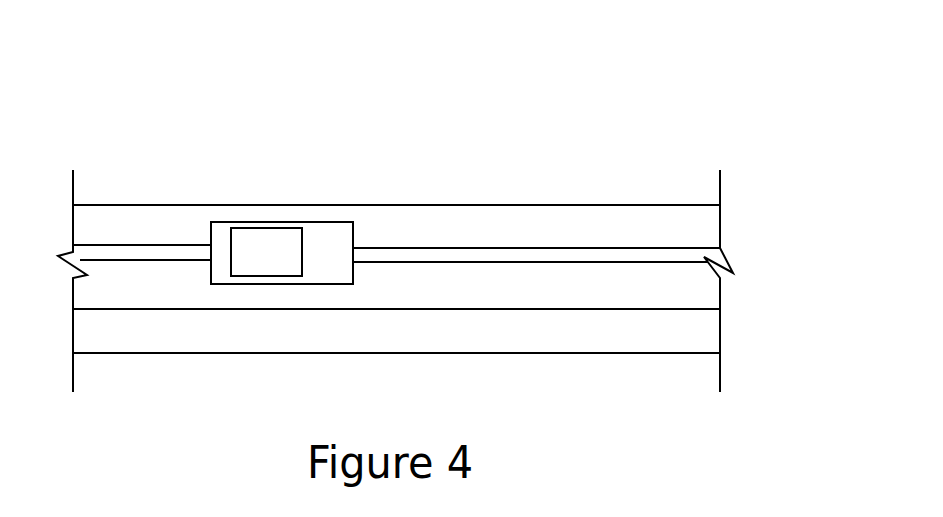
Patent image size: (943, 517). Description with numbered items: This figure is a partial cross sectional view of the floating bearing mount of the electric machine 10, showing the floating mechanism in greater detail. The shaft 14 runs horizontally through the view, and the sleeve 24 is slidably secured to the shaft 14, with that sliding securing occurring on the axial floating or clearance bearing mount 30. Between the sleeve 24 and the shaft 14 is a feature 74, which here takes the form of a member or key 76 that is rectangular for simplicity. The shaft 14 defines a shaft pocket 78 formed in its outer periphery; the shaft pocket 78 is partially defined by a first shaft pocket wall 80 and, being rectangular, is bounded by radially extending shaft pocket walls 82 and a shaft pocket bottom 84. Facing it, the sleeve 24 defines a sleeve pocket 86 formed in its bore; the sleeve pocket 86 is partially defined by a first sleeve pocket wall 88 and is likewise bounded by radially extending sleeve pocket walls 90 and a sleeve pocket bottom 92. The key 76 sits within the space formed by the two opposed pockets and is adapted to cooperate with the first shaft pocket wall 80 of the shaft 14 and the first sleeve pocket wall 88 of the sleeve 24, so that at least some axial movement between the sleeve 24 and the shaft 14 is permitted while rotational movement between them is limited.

The electric machine 10 is at (553, 97).
The shaft 14 is at (713, 330).
The sleeve 24 is at (715, 220).
The axial floating or clearance bearing mount 30 is at (123, 115).
The feature 74 is at (245, 177).
The key 76 is at (225, 250).
The shaft pocket 78 is at (263, 279).
The first shaft pocket wall 80 is at (353, 276).
The shaft pocket walls 82 is at (220, 276).
The shaft pocket bottom 84 is at (325, 280).
The sleeve pocket 86 is at (268, 198).
The first sleeve pocket wall 88 is at (212, 228).
The sleeve pocket walls 90 is at (352, 240).
The sleeve pocket bottom 92 is at (327, 223).